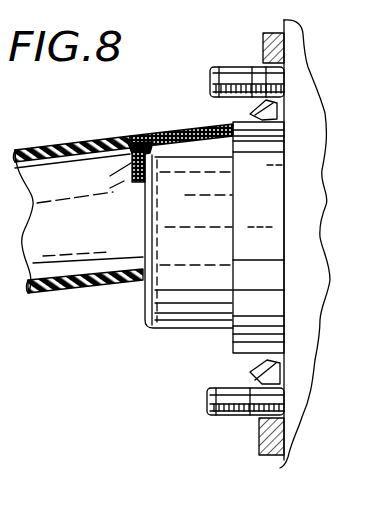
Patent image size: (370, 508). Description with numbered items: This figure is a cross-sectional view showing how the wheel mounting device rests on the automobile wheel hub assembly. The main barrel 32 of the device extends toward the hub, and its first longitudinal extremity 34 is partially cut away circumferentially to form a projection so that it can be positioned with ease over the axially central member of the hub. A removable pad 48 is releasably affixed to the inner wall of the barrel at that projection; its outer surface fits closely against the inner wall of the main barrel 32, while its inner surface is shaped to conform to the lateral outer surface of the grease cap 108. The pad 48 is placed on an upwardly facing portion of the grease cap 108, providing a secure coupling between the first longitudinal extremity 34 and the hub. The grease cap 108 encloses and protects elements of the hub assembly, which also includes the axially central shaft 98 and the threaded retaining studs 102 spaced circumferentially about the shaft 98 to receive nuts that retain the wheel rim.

The main barrel 32 is at (62, 147).
The first longitudinal extremity 34 is at (179, 103).
The removable pad 48 is at (123, 170).
The axially central shaft 98 is at (230, 337).
The retaining studs 102 is at (248, 68).
The grease cap 108 is at (205, 233).